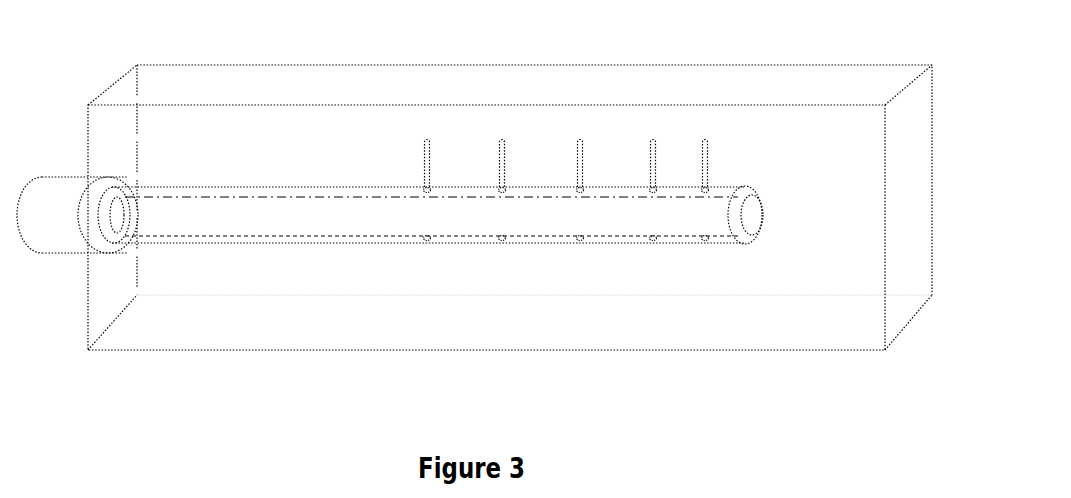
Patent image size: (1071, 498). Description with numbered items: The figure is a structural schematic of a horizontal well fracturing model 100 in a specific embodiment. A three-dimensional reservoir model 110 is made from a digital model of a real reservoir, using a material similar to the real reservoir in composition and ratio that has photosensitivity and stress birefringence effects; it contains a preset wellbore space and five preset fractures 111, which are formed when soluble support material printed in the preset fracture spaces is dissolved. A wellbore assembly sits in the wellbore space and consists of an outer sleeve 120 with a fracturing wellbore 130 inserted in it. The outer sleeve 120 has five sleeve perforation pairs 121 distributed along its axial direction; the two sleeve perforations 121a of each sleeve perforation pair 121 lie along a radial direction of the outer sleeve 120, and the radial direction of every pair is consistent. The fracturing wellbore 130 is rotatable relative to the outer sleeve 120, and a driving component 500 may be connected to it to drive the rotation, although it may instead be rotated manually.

The dust collecting device 100 is at (577, 34).
The reservoir 3D model 110 is at (278, 318).
The preset fracture 111 is at (712, 166).
The outer sleeve 120 is at (749, 244).
The sleeve perforation pair 121 is at (566, 248).
The sleeve perforation 121a is at (503, 241).
The fracturing wellbore 130 is at (754, 219).
The driving component 500 is at (77, 250).